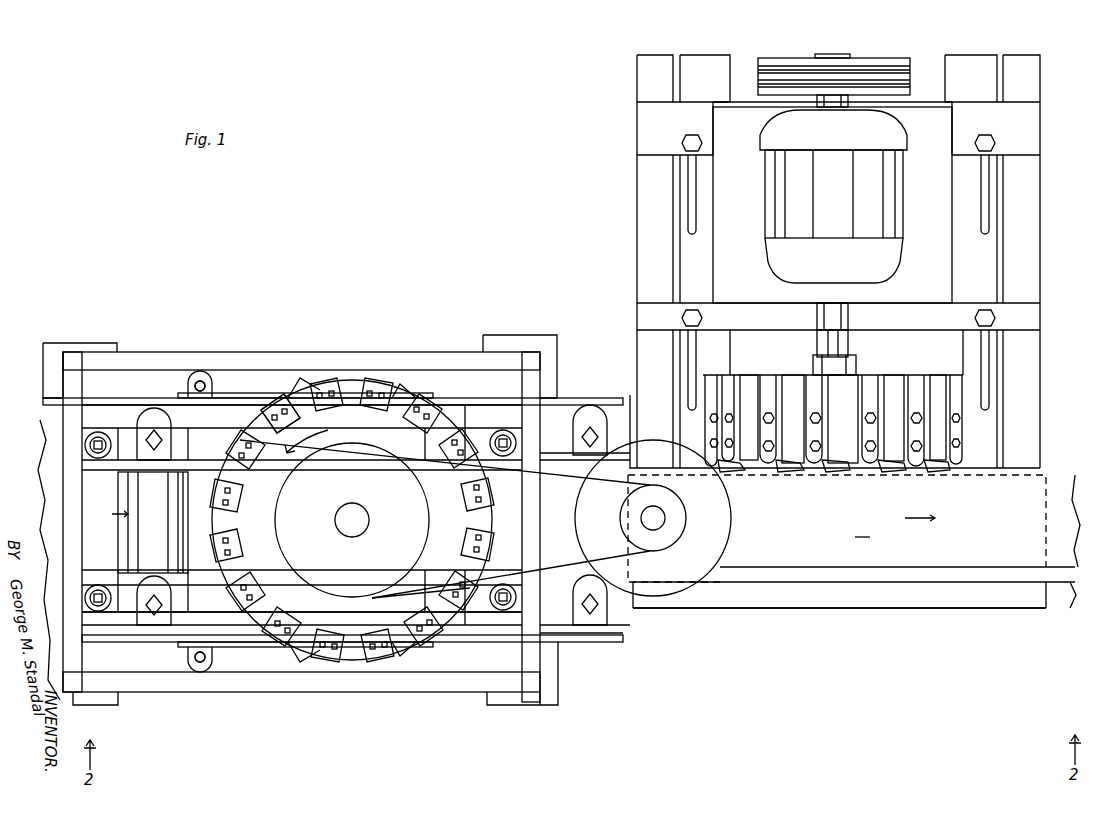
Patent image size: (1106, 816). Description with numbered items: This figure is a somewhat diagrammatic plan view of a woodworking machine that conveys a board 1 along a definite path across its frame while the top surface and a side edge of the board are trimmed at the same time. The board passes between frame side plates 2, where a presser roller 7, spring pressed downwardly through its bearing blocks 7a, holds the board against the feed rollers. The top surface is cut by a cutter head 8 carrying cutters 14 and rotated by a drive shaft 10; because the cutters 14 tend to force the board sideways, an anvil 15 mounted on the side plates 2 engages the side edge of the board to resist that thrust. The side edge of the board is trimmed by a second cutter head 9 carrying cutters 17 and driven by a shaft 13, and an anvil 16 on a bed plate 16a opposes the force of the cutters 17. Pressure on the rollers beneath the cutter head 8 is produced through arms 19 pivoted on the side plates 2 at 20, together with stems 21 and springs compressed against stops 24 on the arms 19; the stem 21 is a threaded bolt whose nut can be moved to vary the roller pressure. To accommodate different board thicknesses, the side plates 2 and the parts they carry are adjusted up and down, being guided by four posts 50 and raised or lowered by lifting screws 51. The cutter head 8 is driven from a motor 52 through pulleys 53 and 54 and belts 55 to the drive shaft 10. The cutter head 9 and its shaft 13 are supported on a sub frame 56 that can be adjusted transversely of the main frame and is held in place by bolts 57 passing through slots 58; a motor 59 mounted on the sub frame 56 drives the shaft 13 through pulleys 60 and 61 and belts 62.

The board 1 is at (40, 495).
The frame side plates 2 is at (130, 400).
The presser roller 7 is at (590, 478).
The bearing blocks 7a is at (580, 430).
The cutter head 8 is at (245, 455).
The cutter head 9 is at (898, 375).
The drive shaft 10 is at (369, 527).
The shaft 13 is at (828, 348).
The cutters 14 is at (345, 385).
The anvil 15 is at (230, 621).
The anvil 16 is at (790, 578).
The bed plate 16a is at (888, 598).
The cutters 17 is at (815, 468).
The arms 19 is at (262, 398).
The pivot 20 is at (300, 398).
The stems 21 is at (200, 381).
The stops 24 is at (210, 388).
The posts 50 is at (95, 352).
The lifting screws 51 is at (88, 445).
The motor 52 is at (720, 535).
The pulley 53 is at (686, 515).
The pulley 54 is at (333, 503).
The belts 55 is at (410, 583).
The sub frame 56 is at (1040, 328).
The bolts 57 is at (682, 141).
The slots 58 is at (694, 220).
The motor 59 is at (846, 200).
The pulley 60 is at (865, 58).
The pulley 61 is at (786, 58).
The belts 62 is at (910, 88).